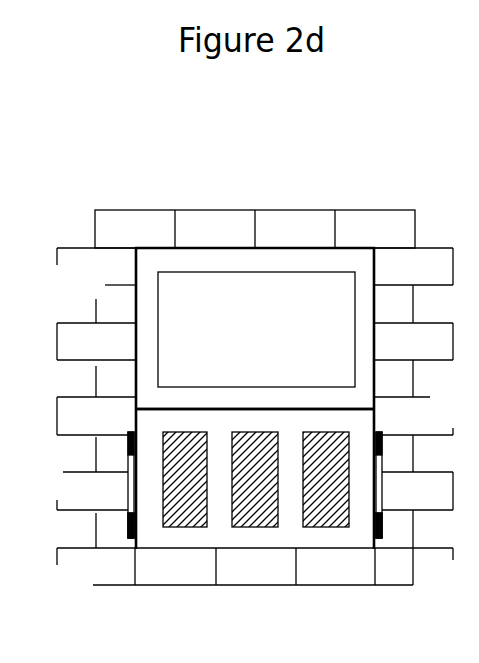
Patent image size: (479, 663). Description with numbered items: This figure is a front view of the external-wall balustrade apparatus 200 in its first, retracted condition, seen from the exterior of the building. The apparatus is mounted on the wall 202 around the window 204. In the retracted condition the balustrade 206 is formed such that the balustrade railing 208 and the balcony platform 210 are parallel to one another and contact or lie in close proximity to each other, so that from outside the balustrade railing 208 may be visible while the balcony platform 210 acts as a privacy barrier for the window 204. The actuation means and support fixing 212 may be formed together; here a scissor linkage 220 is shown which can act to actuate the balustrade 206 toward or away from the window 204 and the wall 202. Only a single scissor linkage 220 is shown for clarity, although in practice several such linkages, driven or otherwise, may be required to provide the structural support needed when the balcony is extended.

The external-wall balustrade apparatus 200 is at (325, 178).
The wall 202 is at (96, 345).
The window 204 is at (162, 315).
The balustrade 206 is at (385, 422).
The balustrade railing 208 is at (240, 564).
The balcony platform 210 is at (163, 476).
The support fixing 212 is at (121, 546).
The scissor linkage 220 is at (109, 508).